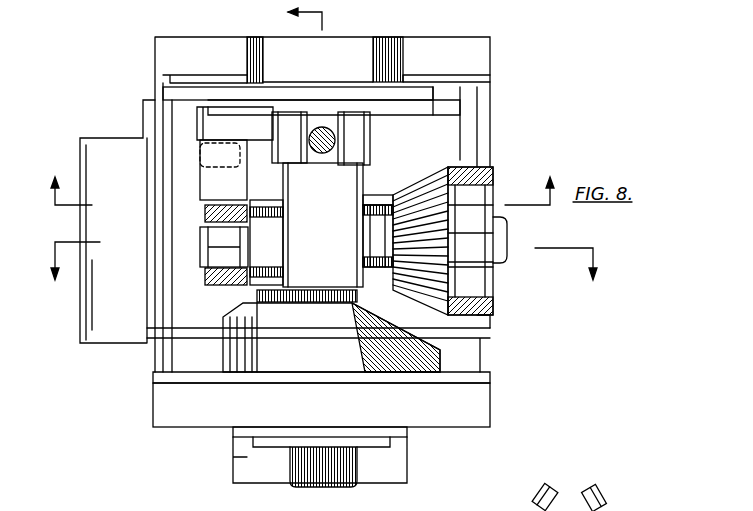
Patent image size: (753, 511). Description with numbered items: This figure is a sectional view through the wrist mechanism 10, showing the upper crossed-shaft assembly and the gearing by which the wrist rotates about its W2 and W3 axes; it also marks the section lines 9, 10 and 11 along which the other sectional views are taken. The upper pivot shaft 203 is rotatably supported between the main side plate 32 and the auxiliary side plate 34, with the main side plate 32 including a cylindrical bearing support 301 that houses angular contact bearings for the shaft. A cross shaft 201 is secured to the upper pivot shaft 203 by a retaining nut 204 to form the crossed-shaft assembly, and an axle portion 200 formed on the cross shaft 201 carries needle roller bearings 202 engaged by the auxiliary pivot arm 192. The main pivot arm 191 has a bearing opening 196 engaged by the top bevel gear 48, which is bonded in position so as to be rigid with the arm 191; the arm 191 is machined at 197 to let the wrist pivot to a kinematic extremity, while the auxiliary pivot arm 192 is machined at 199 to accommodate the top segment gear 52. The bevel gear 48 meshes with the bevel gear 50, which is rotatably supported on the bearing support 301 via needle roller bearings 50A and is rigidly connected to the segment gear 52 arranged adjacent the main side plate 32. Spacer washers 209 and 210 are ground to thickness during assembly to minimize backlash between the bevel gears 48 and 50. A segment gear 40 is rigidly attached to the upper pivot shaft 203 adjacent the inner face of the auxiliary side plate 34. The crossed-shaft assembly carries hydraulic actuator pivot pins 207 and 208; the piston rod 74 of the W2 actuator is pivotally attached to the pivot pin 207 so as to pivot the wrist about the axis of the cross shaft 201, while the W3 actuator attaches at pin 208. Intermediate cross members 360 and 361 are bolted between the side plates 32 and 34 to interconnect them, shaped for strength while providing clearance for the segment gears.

The section line 9— 9 is at (297, 257).
The wrist mechanism 10 is at (302, 186).
The section line 11— 11 is at (329, 262).
The main side plate 32 is at (445, 400).
The auxiliary side plate 34 is at (490, 60).
The segment gear 40 is at (443, 100).
The bevel gear 48 is at (508, 237).
The bevel gear 50 is at (445, 366).
The needle roller bearings 50A is at (450, 510).
The segment gear 52 is at (470, 346).
The piston rod 74 is at (545, 485).
The main pivot arm 191 is at (455, 272).
The auxiliary pivot arm 192 is at (230, 192).
The bearing opening 196 is at (460, 170).
The machined portion 197 is at (470, 314).
The machined portion 199 is at (217, 280).
The axle portion 200 is at (215, 238).
The cross shaft 201 is at (372, 196).
The needle roller bearings 202 is at (227, 252).
The upper pivot shaft 203 is at (310, 232).
The retaining nut 204 is at (267, 243).
The hydraulic actuator pivot pin 207 is at (325, 110).
The hydraulic actuator pivot pin 208 is at (213, 158).
The spacer washer 209 is at (365, 240).
The spacer washer 210 is at (320, 292).
The cylindrical bearing support 301 is at (346, 479).
The intermediate cross member 360 is at (425, 135).
The intermediate cross member 361 is at (200, 315).